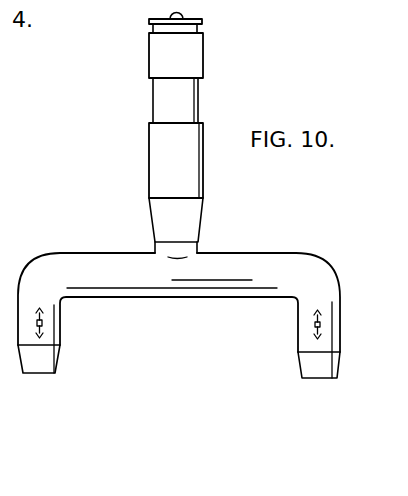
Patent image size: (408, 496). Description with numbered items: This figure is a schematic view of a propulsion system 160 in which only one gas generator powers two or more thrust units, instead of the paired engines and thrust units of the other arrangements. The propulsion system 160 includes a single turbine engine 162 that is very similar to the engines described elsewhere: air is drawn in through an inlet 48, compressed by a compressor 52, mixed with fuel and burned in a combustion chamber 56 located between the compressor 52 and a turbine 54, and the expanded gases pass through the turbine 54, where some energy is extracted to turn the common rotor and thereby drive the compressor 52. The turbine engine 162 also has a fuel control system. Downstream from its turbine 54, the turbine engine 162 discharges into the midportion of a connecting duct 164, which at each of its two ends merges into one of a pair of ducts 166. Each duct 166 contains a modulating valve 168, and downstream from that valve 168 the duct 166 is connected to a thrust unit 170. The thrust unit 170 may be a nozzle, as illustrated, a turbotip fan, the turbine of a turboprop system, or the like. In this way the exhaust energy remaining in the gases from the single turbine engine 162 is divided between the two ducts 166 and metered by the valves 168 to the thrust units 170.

The inlet 48 is at (196, 17).
The compressor 52 is at (148, 50).
The turbine 54 is at (149, 172).
The combustion chamber 56 is at (188, 104).
The propulsion system 160 is at (154, 130).
The turbine engine 162 is at (203, 93).
The connecting duct 164 is at (167, 300).
The ducts 166 is at (60, 312).
The modulating valve 168 is at (45, 333).
The thrust unit 170 is at (55, 373).